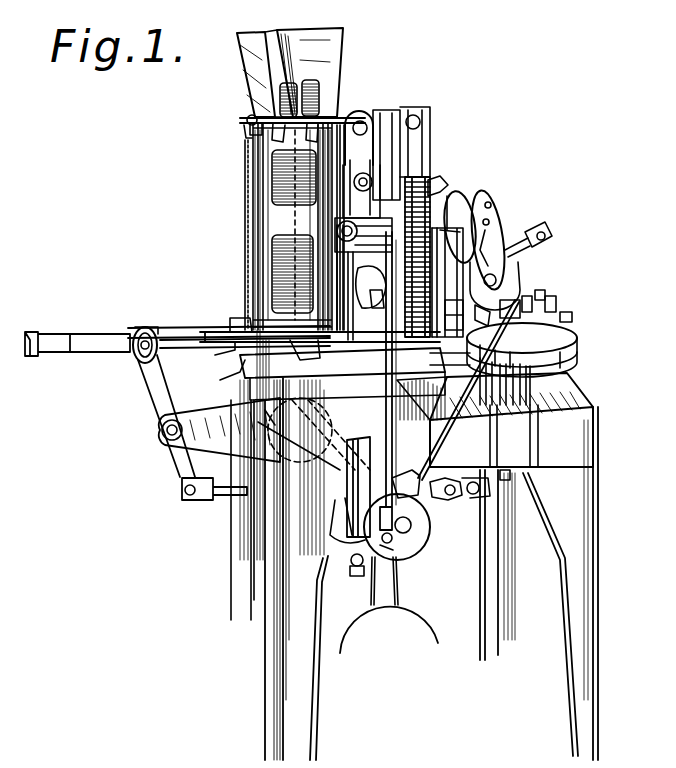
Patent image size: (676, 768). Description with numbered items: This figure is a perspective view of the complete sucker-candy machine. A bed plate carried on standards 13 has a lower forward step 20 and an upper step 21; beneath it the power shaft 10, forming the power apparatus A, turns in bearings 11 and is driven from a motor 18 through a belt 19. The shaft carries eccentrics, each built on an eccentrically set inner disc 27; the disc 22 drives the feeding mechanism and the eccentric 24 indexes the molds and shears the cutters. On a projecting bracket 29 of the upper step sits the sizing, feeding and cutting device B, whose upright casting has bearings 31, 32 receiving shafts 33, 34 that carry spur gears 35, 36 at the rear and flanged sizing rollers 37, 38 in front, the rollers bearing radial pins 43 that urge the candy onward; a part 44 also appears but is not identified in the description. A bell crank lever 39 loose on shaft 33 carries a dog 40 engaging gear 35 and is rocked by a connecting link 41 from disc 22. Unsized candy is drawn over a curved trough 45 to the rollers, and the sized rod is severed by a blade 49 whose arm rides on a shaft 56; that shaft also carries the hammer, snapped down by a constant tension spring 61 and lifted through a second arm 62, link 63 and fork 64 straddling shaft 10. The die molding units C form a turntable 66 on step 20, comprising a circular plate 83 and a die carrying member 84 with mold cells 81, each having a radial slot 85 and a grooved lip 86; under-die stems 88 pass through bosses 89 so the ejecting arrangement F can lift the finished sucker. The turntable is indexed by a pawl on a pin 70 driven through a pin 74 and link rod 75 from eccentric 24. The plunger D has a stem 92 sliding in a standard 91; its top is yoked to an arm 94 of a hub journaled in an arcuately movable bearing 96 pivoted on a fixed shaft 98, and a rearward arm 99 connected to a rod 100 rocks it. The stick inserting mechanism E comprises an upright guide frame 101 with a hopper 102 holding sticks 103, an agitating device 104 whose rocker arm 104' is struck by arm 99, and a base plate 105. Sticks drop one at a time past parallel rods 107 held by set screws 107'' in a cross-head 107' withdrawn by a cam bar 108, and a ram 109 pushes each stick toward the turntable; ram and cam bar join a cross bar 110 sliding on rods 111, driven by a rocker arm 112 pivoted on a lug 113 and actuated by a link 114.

The hopper 102 is at (328, 50).
The sticks 103 is at (272, 300).
The agitating device 104 is at (289, 117).
The rocker arm 104' is at (226, 127).
The stick inserting mechanism E is at (240, 232).
The upright guide frame 101 is at (253, 262).
The rearwardly projecting arm 99 is at (256, 163).
The rod 100 is at (252, 197).
The plate 105 is at (234, 318).
The upper rotary shaft 33 is at (336, 232).
The arcuately movable bearing 96 is at (357, 114).
The arm 94 is at (383, 112).
The fixed shaft 98 is at (363, 172).
The bell crank lever 39 is at (372, 205).
The plunger stem 92 is at (428, 128).
The pivoted dog 40 is at (432, 170).
The reciprocating plunger D is at (430, 166).
The standard 91 is at (438, 186).
The lower rotary shaft 34 is at (378, 298).
The cutting blade 49 is at (449, 200).
The upper bearing 31 is at (452, 205).
The radially mounted pins 43 is at (482, 200).
The upper sizing and feeding roller 37 is at (500, 210).
The sizing, feeding and cutting device B is at (500, 190).
The spur gear 35 is at (458, 230).
The frame 44 is at (457, 252).
The curved trough 45 is at (522, 265).
The shaft 56 is at (532, 230).
The second arm 62 is at (540, 226).
The lower bearing 32 is at (446, 305).
The spur gear 36 is at (446, 305).
The constant tension spring 61 is at (478, 318).
The lower sizing and feeding roller 38 is at (510, 300).
The mold cells 81 is at (534, 300).
The turntable 66 is at (545, 292).
The radial slot 85 is at (557, 300).
The die molding units C is at (572, 301).
The lip 86 is at (572, 320).
The circular plate 83 is at (575, 344).
The die carrying member 84 is at (578, 356).
The ejecting arrangement F is at (555, 372).
The lower step 20 is at (560, 400).
The depending stem 88 is at (500, 412).
The integral boss 89 is at (538, 412).
The parallel rods 107 is at (322, 361).
The set screws 107'' is at (238, 353).
The cross-head 107' is at (229, 379).
The upper step 21 is at (328, 368).
The inner circular disc 27 is at (270, 425).
The cam bar 108 is at (210, 330).
The ram 109 is at (172, 338).
The parallel rods 111 is at (68, 343).
The cross bar 110 is at (140, 325).
The rocker arm 112 is at (168, 388).
The integral lug 113 is at (219, 430).
The link 114 is at (236, 500).
The connecting link 41 is at (386, 405).
The link 63 is at (446, 440).
The projecting bracket 29 is at (408, 372).
The fork 64 is at (413, 470).
The bearings 11 is at (347, 500).
The power shaft 10 is at (408, 526).
The eccentric disc 22 is at (420, 540).
The eccentric 24 is at (340, 548).
The link rod 75 is at (440, 500).
The power shaft apparatus A is at (448, 515).
The rotatably mounted pin 74 is at (505, 496).
The pin 70 is at (514, 474).
The belt 19 is at (398, 583).
The motor 18 is at (358, 620).
The standards 13 is at (600, 502).